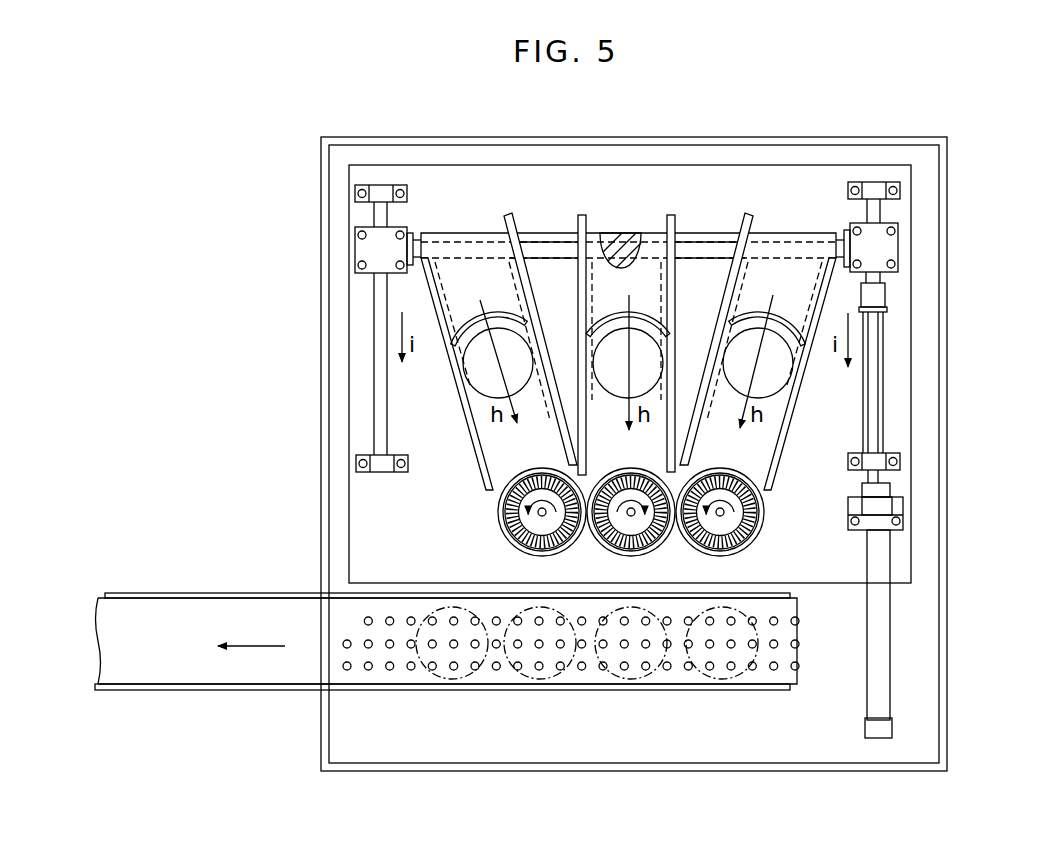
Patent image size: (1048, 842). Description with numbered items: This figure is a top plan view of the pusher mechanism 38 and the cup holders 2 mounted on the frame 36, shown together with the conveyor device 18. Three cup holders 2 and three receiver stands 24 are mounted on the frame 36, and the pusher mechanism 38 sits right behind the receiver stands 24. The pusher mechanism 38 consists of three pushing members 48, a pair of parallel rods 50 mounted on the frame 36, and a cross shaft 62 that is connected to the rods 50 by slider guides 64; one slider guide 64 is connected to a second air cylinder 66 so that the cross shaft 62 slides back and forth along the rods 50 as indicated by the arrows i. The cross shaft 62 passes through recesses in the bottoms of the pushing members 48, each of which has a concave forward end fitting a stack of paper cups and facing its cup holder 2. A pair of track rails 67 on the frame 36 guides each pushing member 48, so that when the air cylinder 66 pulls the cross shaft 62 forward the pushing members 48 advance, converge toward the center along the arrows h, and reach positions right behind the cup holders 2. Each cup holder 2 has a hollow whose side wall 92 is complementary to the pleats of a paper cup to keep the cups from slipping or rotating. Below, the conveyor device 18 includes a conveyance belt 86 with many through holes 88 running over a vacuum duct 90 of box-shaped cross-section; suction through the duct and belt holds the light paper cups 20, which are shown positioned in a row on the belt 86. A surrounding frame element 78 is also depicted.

The cup holder 2 is at (497, 520).
The conveyor device 18 is at (447, 651).
The paper cups 20 is at (545, 680).
The receiver stand 24 is at (473, 378).
The frame 36 is at (440, 178).
The pusher mechanism 38 is at (628, 207).
The pushing member 48 is at (472, 233).
The parallel rods 50 is at (377, 370).
The cross shaft 62 is at (702, 240).
The slider guide 64 is at (368, 250).
The second air cylinder 66 is at (872, 688).
The track rails 67 is at (782, 456).
The frame 78 is at (947, 545).
The conveyance belt 86 is at (233, 683).
The through holes 88 is at (773, 668).
The duct 90 is at (183, 593).
The side wall 92 is at (765, 507).